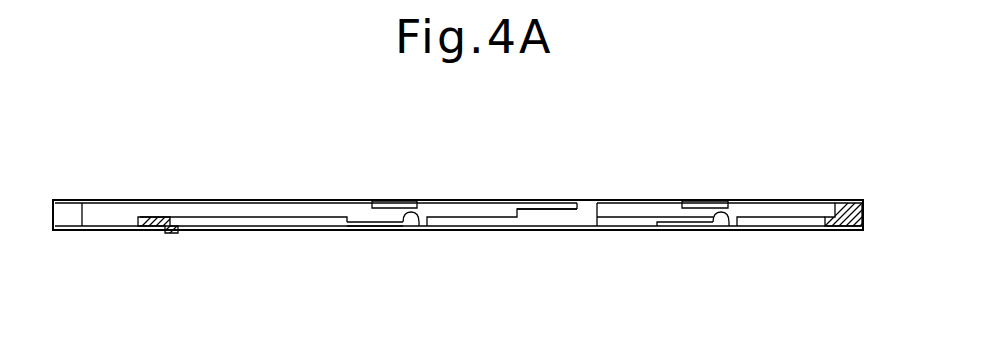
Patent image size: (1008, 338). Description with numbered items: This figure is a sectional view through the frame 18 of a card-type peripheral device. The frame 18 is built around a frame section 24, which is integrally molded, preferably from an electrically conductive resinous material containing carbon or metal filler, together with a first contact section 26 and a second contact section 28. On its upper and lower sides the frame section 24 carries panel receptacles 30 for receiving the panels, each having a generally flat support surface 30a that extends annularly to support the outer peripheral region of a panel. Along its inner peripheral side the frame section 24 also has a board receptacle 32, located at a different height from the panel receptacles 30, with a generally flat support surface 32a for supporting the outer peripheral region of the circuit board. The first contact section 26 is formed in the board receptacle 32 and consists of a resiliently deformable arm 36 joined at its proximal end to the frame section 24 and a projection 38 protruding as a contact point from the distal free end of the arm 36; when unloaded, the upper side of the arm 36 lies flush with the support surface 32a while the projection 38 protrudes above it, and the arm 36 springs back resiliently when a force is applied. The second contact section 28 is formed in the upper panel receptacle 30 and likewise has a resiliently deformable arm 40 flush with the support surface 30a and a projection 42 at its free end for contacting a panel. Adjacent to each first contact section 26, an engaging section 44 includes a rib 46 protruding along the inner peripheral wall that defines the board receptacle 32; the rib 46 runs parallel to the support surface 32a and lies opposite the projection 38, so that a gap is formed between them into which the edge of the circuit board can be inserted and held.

The frame 18 is at (331, 136).
The frame section 24 is at (224, 200).
The first contact section 26 is at (384, 228).
The second contact section 28 is at (550, 210).
The panel receptacle 30 is at (477, 200).
The support surface 30a is at (625, 200).
The board receptacle 32 is at (780, 200).
The support surface 32a is at (280, 200).
The resiliently deformable arm 36 is at (360, 228).
The projection 38 is at (413, 228).
The resiliently deformable arm 40 is at (541, 200).
The projection 42 is at (573, 200).
The engaging section 44 is at (388, 200).
The rib 46 is at (406, 208).